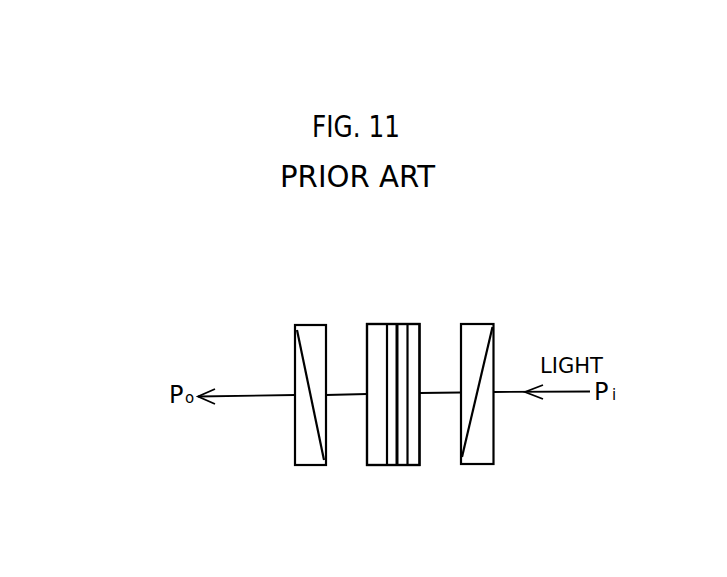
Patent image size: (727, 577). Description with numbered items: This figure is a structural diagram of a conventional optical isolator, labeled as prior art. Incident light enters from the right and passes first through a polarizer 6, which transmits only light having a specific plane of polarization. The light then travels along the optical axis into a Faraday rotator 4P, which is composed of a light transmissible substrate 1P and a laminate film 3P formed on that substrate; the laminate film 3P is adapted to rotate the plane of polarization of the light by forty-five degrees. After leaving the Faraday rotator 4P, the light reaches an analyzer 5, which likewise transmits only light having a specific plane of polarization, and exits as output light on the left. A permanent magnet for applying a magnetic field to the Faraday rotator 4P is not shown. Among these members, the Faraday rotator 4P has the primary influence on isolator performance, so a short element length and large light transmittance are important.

The light transmissible substrate 1P is at (374, 323).
The laminate film 3P is at (387, 322).
The Faraday rotator 4P is at (430, 475).
The analyzer 5 is at (308, 466).
The polarizer 6 is at (477, 465).